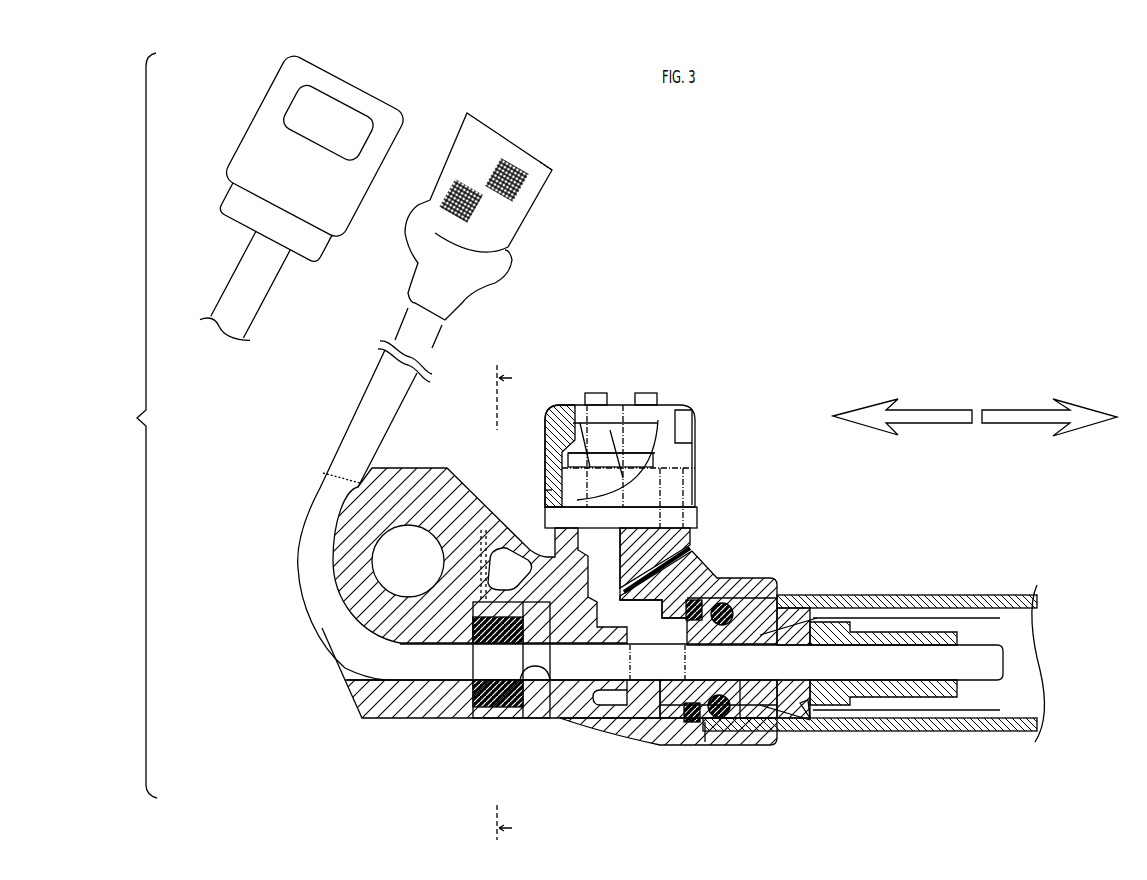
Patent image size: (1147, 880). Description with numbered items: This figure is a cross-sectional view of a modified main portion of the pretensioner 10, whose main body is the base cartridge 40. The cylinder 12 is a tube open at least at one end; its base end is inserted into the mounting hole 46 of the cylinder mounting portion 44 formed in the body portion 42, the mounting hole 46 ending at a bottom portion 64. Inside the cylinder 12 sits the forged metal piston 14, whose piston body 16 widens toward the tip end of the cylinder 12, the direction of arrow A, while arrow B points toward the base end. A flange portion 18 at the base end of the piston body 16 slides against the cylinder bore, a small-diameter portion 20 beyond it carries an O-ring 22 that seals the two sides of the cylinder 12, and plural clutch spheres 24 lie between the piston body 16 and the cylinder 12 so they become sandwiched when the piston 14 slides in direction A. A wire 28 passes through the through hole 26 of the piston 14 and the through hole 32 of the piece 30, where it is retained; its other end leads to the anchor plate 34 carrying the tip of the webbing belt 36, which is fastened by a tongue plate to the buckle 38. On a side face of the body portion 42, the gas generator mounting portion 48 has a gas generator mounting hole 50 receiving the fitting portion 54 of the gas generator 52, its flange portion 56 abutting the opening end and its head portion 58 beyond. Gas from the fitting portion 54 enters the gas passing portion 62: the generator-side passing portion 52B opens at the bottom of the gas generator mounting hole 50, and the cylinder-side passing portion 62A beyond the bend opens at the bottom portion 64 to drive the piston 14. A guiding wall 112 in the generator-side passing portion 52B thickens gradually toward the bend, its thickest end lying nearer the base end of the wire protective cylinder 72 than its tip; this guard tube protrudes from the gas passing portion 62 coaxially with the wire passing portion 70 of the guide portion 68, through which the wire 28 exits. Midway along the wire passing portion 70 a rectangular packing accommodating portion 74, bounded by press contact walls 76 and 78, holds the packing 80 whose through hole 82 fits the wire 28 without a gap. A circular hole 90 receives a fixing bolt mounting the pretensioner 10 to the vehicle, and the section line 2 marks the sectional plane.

The pretensioner 10 is at (745, 275).
The cylinder 12 is at (968, 596).
The piston 14 is at (805, 722).
The piston body 16 is at (808, 600).
The flange portion 18 is at (714, 722).
The small-diameter portion 20 is at (660, 722).
The O-ring 22 is at (692, 722).
The clutch spheres 24 is at (750, 600).
The through hole 26 is at (835, 718).
The wire 28 is at (255, 298).
The piece 30 is at (885, 625).
The through hole 32 is at (948, 650).
The anchor plate 34 is at (500, 262).
The webbing belt 36 is at (537, 170).
The buckle 38 is at (247, 155).
The base cartridge 40 is at (768, 500).
The body portion 42 is at (596, 722).
The cylinder mounting portion 44 is at (760, 742).
The mounting hole 46 is at (735, 760).
The gas generator mounting portion 48 is at (690, 540).
The gas generator mounting hole 50 is at (547, 483).
The gas generator 52 is at (630, 418).
The generator-side passing portion 52B is at (621, 528).
The fitting portion 54 is at (587, 420).
The flange portion 56 is at (650, 457).
The head portion 58 is at (640, 425).
The gas passing portion 62 is at (695, 412).
The cylinder-side passing portion 62A is at (640, 748).
The bottom portion 64 is at (705, 600).
The guide portion 68 is at (455, 470).
The wire passing portion 70 is at (415, 692).
The wire protective cylinder 72 is at (617, 708).
The packing accommodating portion 74 is at (500, 708).
The press contact wall 76 is at (520, 690).
The press contact wall 78 is at (478, 708).
The packing 80 is at (486, 532).
The through hole 82 is at (553, 702).
The circular hole 90 is at (418, 525).
The guiding wall 112 is at (688, 564).
The section line 2 is at (511, 602).
The arrow A is at (1015, 408).
The arrow B is at (930, 408).